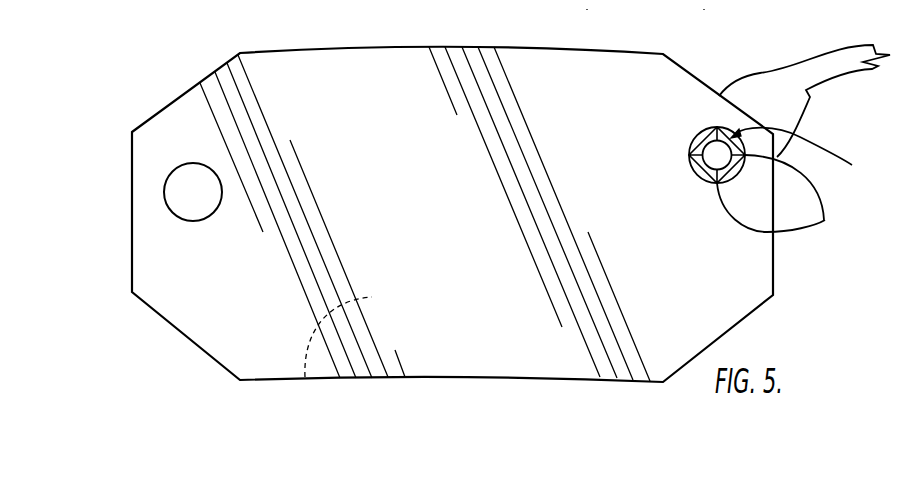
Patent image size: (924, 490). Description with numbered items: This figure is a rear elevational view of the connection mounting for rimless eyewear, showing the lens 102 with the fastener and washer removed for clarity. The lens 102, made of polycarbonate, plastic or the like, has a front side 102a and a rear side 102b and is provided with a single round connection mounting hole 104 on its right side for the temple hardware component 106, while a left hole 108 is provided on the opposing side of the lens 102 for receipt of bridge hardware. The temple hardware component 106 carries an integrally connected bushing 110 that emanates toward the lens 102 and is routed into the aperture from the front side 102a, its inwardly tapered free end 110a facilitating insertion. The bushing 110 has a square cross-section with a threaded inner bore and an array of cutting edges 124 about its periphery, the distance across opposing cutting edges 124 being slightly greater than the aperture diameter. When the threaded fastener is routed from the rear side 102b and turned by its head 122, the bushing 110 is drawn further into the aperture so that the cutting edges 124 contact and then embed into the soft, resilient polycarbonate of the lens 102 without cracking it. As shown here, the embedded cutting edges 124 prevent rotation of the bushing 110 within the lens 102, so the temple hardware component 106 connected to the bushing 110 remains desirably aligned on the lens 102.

The lens 102 is at (331, 82).
The front side of lens 102a is at (467, 342).
The rear side of lens 102b is at (305, 377).
The round connection mounting hole 104 is at (717, 127).
The temple hardware component 106 is at (788, 102).
The left hole 108 is at (185, 165).
The bushing 110 is at (809, 162).
The free end of bushing 110a is at (587, 7).
The head of fastener 122 is at (704, 7).
The cutting edges 124 is at (824, 220).